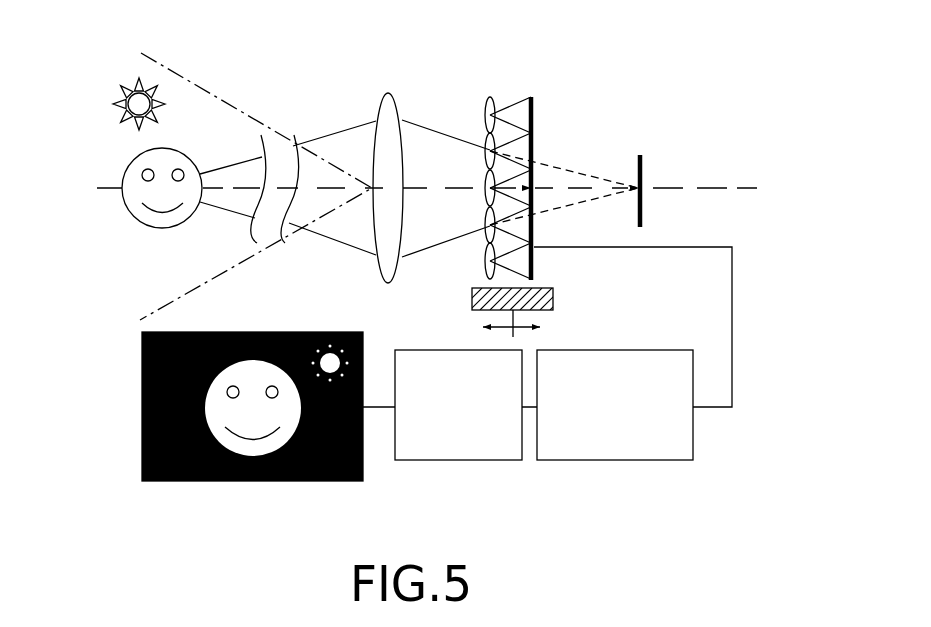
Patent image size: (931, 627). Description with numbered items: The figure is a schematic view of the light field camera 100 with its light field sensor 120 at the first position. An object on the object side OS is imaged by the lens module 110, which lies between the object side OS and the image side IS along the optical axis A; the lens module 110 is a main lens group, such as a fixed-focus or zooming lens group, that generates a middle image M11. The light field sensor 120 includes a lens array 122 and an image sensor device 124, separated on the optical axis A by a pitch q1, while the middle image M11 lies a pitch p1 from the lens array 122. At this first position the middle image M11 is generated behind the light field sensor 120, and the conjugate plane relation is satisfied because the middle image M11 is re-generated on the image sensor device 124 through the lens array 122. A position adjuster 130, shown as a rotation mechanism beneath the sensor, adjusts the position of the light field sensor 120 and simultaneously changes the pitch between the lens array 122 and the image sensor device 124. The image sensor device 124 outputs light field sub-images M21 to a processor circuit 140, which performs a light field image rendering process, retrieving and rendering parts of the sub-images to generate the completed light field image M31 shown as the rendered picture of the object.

The light field camera 100 is at (825, 540).
The lens module 110 is at (380, 102).
The light field sensor 120 is at (800, 50).
The lens array 122 is at (481, 103).
The image sensor device 124 is at (534, 124).
The position adjuster 130 is at (556, 300).
The processor circuit 140 is at (472, 462).
The middle image M11 is at (642, 167).
The light field sub-image M21 is at (600, 462).
The light field image M31 is at (142, 427).
The object side OS is at (85, 188).
The image side IS is at (723, 192).
The optical axis A is at (85, 187).
The pitch q1 is at (531, 38).
The pitch p1 is at (640, 155).